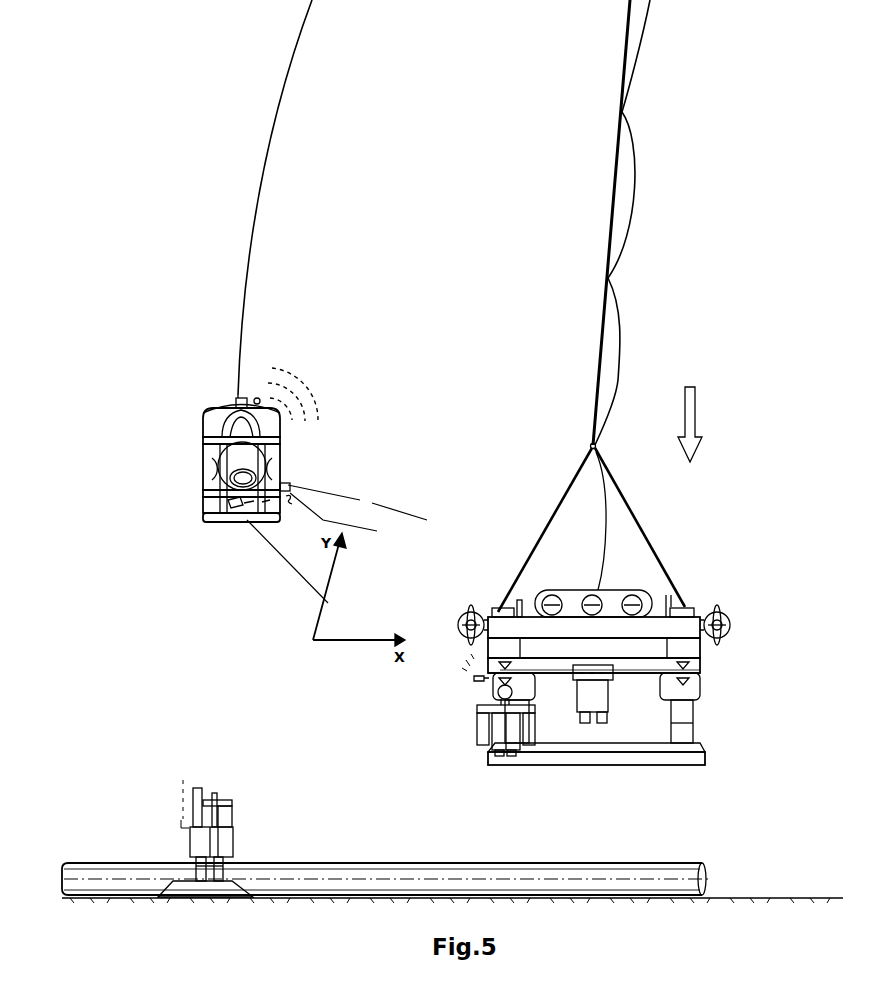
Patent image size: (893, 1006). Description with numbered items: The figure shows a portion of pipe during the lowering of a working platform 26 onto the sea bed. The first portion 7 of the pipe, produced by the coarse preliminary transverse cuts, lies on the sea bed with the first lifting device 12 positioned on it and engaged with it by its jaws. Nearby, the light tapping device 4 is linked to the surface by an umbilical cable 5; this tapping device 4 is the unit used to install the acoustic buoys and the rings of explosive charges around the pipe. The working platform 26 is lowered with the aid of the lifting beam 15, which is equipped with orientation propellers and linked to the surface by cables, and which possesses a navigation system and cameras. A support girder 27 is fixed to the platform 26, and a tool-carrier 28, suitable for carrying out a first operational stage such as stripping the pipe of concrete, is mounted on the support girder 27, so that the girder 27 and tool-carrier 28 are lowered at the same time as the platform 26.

The tapping device 4 is at (203, 474).
The umbilical cable 5 is at (271, 127).
The first portion 7 is at (308, 872).
The first lifting device 12 is at (230, 830).
The lifting beam 15 is at (703, 607).
The working platform 26 is at (490, 692).
The support girder 27 is at (548, 667).
The tool-carrier 28 is at (605, 698).